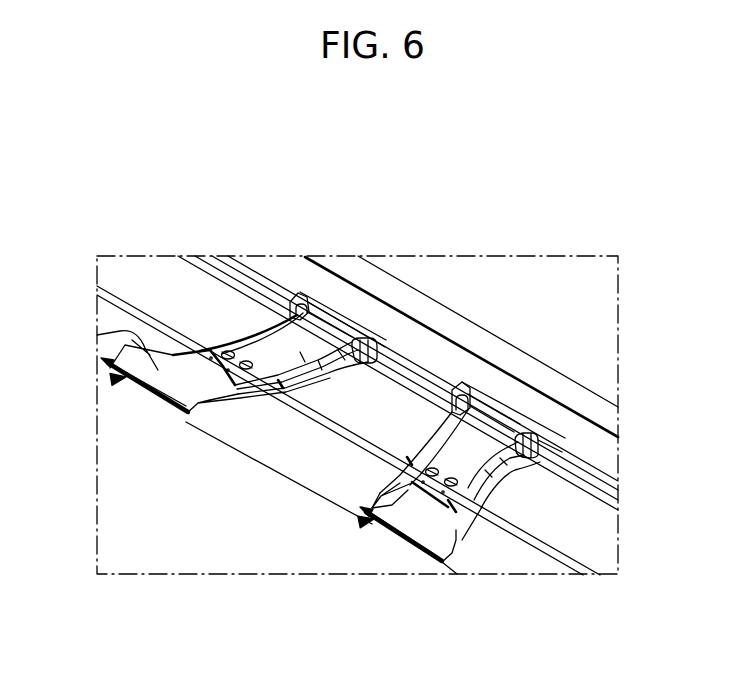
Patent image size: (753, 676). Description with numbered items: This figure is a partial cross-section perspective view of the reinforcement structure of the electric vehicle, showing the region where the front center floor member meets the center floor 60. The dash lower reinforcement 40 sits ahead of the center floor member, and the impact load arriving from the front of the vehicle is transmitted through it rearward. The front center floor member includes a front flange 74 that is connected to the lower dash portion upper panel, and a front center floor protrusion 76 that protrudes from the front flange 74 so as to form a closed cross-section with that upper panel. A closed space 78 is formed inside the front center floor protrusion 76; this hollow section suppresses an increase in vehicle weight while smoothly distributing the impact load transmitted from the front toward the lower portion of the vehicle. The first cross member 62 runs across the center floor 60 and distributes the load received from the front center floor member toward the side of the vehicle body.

The dash lower reinforcement 40 is at (112, 380).
The center floor 60 is at (598, 538).
The first cross member 62 is at (437, 290).
The front flange 74 is at (222, 419).
The front center floor protrusion 76 is at (97, 335).
The closed space 78 is at (156, 387).